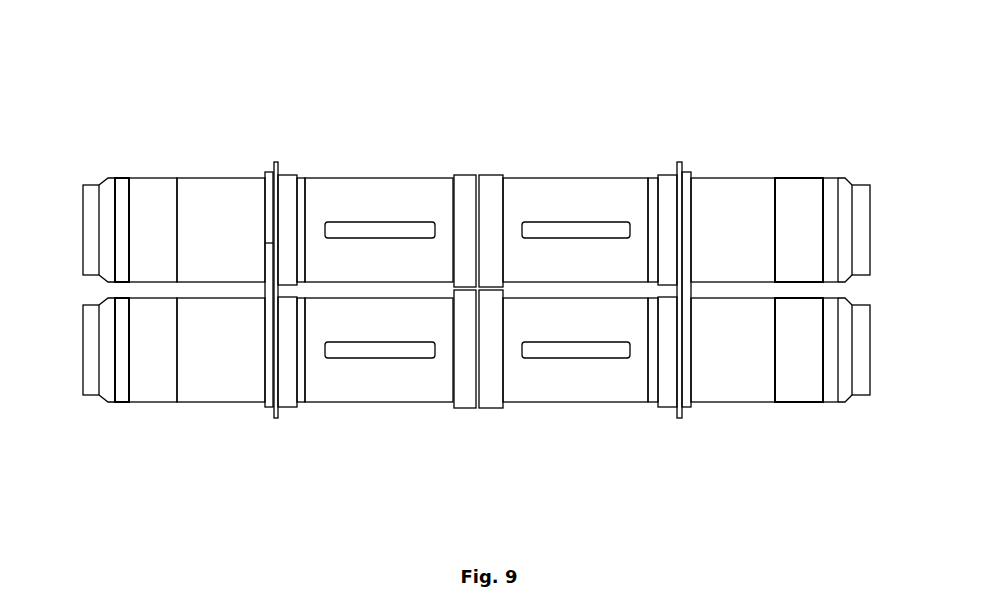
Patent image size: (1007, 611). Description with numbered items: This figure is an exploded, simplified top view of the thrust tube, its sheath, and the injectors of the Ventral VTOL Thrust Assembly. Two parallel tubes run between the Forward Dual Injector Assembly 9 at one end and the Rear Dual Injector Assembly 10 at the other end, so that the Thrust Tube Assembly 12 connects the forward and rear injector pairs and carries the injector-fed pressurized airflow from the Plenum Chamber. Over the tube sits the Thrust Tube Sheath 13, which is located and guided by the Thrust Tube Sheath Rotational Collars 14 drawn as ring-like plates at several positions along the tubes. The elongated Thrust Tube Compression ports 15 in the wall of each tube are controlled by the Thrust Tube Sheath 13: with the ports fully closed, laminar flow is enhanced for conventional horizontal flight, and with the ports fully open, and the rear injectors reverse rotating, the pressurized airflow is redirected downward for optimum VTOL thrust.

The Forward Dual Injector Assembly 9 is at (807, 327).
The Rear Dual Injector Assembly 10 is at (154, 350).
The Thrust Tube Assembly 12 is at (303, 333).
The Thrust Tube Sheath 13 is at (425, 310).
The Thrust Tube Sheath Rotational Collars 14 is at (685, 175).
The Thrust Tube Compression ports 15 is at (580, 347).